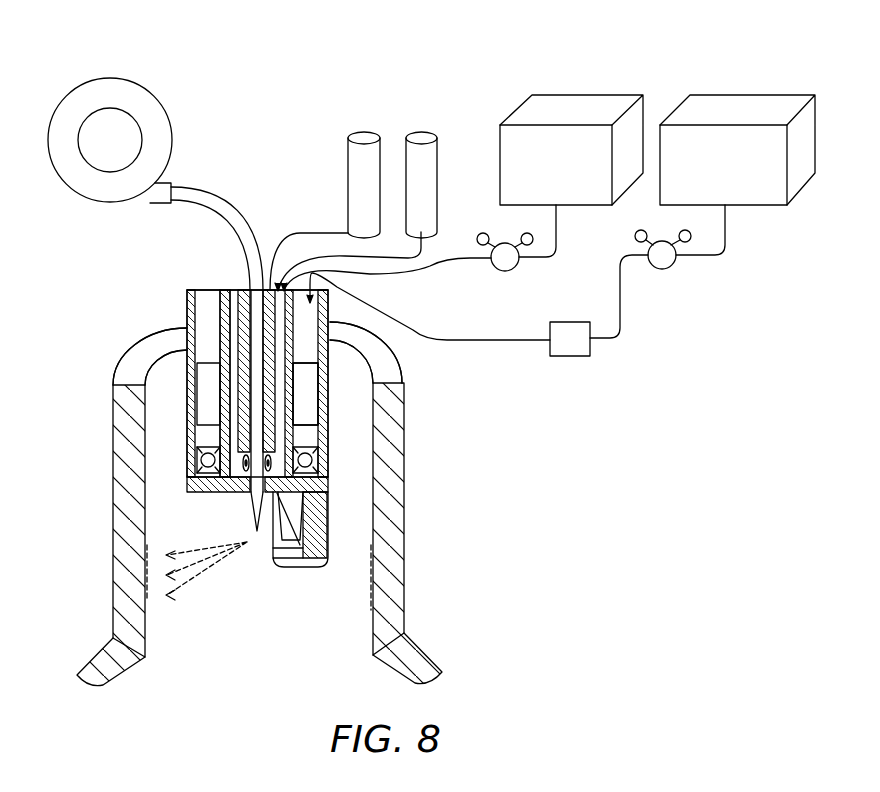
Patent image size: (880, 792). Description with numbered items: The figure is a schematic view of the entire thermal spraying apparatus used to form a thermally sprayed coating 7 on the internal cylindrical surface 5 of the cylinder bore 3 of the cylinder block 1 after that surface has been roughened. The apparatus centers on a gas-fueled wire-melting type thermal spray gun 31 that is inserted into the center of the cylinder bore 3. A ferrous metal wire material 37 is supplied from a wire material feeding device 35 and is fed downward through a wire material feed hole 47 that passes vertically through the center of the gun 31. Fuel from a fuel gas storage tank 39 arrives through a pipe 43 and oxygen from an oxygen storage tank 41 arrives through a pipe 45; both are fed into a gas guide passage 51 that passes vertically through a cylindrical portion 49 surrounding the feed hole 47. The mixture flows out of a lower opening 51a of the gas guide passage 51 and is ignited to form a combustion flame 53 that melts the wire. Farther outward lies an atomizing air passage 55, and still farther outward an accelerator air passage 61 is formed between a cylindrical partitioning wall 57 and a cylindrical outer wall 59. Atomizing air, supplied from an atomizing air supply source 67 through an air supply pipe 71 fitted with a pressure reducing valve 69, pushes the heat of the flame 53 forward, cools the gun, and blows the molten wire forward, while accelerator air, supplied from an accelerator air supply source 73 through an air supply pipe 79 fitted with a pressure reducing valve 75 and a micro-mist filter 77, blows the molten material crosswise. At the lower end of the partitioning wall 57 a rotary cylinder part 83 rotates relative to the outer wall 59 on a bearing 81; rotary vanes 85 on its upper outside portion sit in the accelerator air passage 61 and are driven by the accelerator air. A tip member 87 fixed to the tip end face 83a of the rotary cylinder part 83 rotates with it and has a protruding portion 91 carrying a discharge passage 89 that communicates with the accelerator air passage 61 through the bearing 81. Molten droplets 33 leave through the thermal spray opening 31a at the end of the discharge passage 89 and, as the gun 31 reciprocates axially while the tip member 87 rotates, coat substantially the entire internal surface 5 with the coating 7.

The cylinder block 1 is at (123, 344).
The cylinder bore 3 is at (258, 662).
The internal cylindrical surface 5 is at (162, 410).
The thermally sprayed coating 7 is at (150, 600).
The thermal spray gun 31 is at (182, 452).
The thermal spray opening 31a is at (264, 540).
The molten droplets 33 is at (213, 560).
The wire material feeding device 35 is at (160, 85).
The wire material 37 is at (235, 192).
The fuel gas storage tank 39 is at (368, 132).
The oxygen storage tank 41 is at (430, 132).
The pipe 43 is at (318, 232).
The pipe 45 is at (436, 240).
The wire material feed hole 47 is at (252, 292).
The cylindrical portion 49 is at (185, 356).
The gas guide passage 51 is at (305, 312).
The lower opening 51a is at (195, 492).
The combustion flame 53 is at (249, 493).
The atomizing air passage 55 is at (238, 292).
The partitioning wall 57 is at (222, 310).
The outer wall 59 is at (188, 292).
The accelerator air passage 61 is at (398, 375).
The atomizing air supply source 67 is at (600, 95).
The pressure reducing valve 69 is at (517, 272).
The air supply pipe 71 is at (460, 268).
The accelerator air supply source 73 is at (757, 95).
The pressure reducing valve 75 is at (672, 268).
The micro-mist filter 77 is at (580, 358).
The air supply pipe 79 is at (526, 342).
The bearing 81 is at (322, 455).
The rotary cylinder part 83 is at (300, 438).
The tip end face 83a is at (305, 500).
The rotary vanes 85 is at (375, 410).
The tip member 87 is at (298, 572).
The discharge passage 89 is at (315, 566).
The protruding portion 91 is at (284, 568).